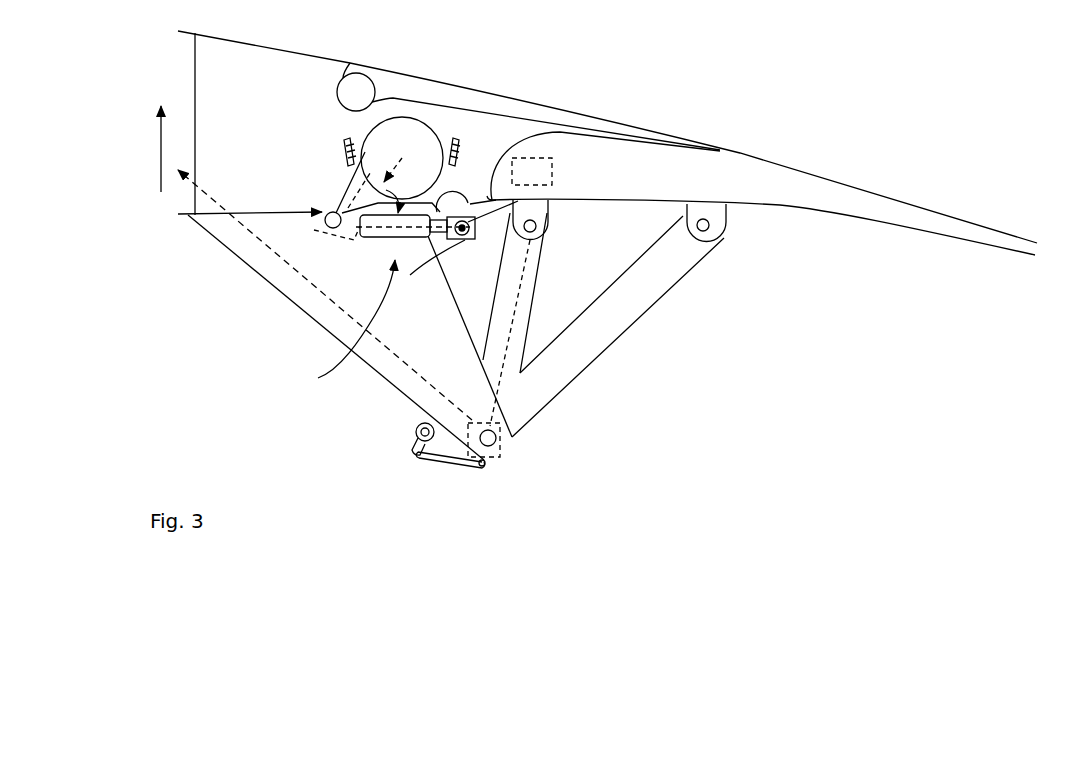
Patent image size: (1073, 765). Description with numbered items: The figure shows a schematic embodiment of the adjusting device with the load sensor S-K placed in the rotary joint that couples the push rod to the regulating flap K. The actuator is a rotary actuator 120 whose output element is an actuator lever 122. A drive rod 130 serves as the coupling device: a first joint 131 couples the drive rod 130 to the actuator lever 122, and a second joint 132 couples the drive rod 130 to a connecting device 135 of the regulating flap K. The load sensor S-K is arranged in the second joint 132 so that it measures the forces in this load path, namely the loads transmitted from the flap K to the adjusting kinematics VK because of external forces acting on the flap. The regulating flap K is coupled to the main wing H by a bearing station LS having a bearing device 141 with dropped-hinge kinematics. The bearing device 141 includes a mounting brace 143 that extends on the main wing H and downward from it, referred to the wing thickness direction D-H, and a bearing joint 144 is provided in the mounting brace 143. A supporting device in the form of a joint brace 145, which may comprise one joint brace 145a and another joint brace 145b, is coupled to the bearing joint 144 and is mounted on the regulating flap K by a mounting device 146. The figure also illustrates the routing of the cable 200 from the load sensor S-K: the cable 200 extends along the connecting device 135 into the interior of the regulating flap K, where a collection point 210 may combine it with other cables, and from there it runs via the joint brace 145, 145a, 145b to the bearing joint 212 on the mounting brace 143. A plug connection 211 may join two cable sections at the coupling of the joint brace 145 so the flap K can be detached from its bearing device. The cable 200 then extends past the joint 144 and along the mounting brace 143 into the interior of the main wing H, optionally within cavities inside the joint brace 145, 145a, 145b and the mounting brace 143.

The rotary actuator 120 is at (415, 128).
The actuator lever 122 is at (347, 190).
The drive rod 130 is at (365, 238).
The first joint 131 is at (322, 222).
The second joint 132 is at (477, 246).
The connecting device 135 is at (470, 197).
The bearing device 141 is at (768, 290).
The mounting brace 143 is at (390, 371).
The bearing joint 144 is at (482, 467).
The joint brace 145 is at (633, 325).
The joint brace 145a is at (540, 303).
The joint brace 145b is at (595, 353).
The mounting device 146 is at (746, 232).
The cable 200 is at (285, 252).
The collection point 210 is at (545, 167).
The plug connection 211 is at (552, 216).
The bearing joint 212 is at (496, 437).
The main wing H is at (205, 105).
The wing thickness direction D-H is at (134, 149).
The regulating flap K is at (797, 185).
The bearing station LS is at (844, 325).
The load sensor S-K is at (391, 309).
The adjusting kinematics VK is at (292, 381).